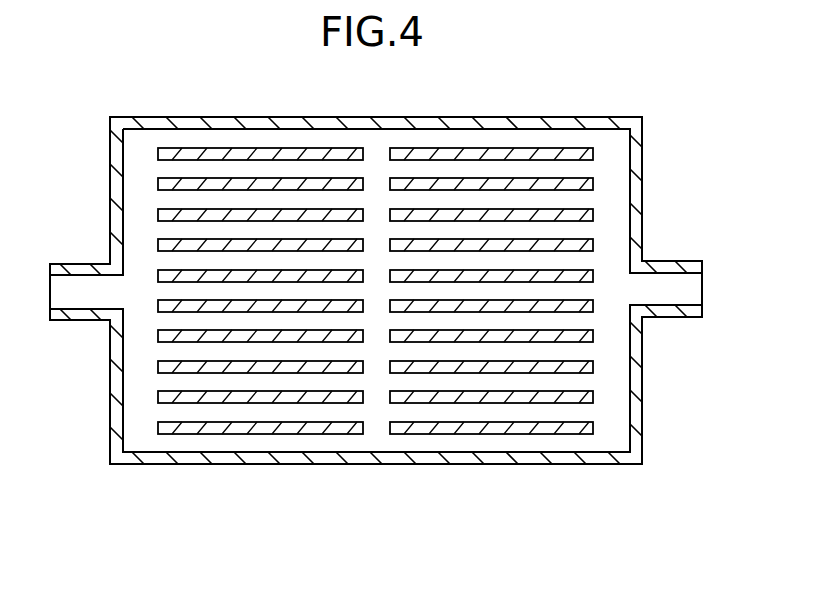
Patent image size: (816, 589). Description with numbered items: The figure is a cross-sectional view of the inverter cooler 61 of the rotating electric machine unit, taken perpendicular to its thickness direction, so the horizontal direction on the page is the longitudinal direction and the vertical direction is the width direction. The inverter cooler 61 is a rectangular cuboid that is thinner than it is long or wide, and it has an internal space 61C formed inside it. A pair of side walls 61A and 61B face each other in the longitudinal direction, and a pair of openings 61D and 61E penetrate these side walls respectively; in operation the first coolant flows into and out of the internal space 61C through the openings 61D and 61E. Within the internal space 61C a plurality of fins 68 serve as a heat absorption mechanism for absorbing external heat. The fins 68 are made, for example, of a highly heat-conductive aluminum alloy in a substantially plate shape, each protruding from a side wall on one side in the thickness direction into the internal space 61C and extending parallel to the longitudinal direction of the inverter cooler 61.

The inverter cooler 61 is at (587, 117).
The side wall 61A is at (110, 156).
The side wall 61B is at (642, 170).
The internal space 61C is at (577, 444).
The opening 61D is at (70, 320).
The opening 61E is at (680, 313).
The fins 68 is at (318, 434).